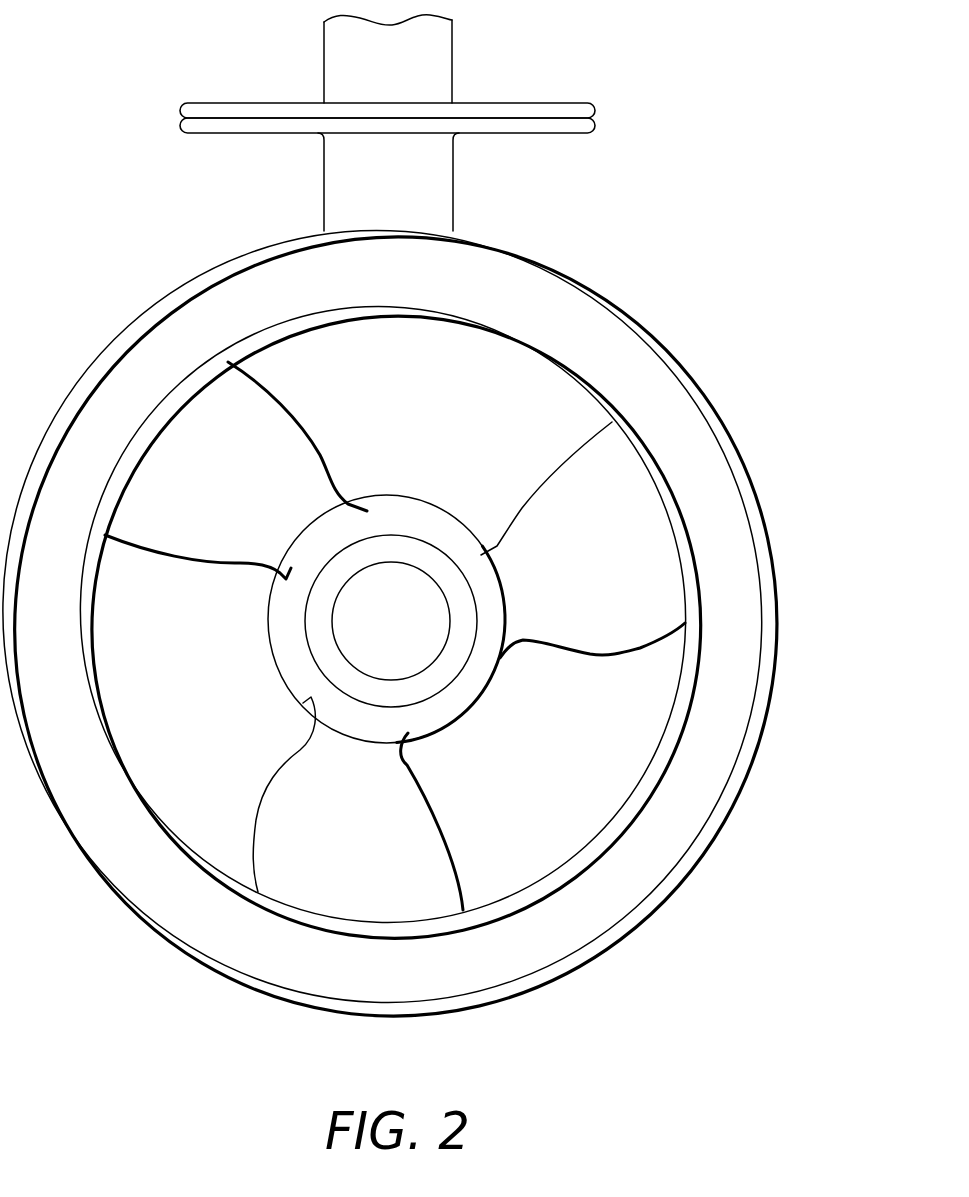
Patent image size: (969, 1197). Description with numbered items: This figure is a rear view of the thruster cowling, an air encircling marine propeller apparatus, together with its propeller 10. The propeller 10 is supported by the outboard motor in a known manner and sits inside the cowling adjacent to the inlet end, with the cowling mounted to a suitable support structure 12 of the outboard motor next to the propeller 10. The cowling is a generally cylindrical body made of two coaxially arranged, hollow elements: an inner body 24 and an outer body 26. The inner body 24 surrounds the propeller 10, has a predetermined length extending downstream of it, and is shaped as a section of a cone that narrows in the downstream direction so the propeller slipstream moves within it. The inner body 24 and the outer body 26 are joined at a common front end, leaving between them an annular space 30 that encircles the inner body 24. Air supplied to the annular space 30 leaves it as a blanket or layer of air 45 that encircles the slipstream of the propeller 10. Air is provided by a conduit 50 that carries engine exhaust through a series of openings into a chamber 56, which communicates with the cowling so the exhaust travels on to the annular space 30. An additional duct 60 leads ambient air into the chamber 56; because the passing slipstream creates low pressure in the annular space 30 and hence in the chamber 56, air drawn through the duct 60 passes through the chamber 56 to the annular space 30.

The propeller 10 is at (258, 650).
The support structure 12 is at (180, 112).
The inner body 24 is at (180, 857).
The outer body 26 is at (228, 977).
The annular space 30 is at (588, 920).
The layer of air 45 is at (730, 724).
The conduit 50 is at (455, 52).
The chamber 56 is at (456, 187).
The duct 60 is at (460, 59).